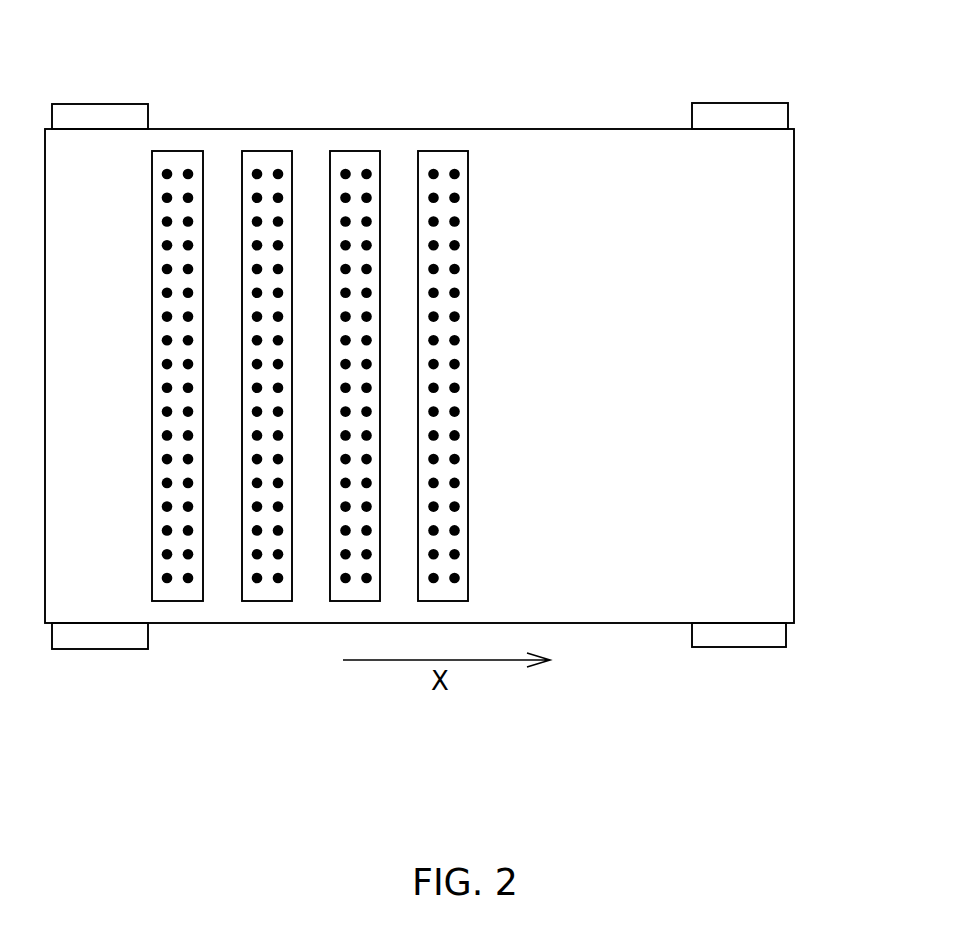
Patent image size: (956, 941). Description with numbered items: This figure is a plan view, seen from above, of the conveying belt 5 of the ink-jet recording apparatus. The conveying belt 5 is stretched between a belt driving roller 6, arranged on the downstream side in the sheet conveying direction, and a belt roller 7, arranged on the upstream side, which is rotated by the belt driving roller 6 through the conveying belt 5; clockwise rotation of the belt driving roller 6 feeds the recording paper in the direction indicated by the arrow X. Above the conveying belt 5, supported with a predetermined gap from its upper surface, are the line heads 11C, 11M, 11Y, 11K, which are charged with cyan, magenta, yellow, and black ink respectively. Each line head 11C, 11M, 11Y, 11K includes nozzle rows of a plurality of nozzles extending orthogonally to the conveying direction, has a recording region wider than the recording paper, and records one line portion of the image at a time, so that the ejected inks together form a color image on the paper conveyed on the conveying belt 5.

The conveying belt 5 is at (783, 557).
The belt driving roller 6 is at (739, 115).
The belt roller 7 is at (101, 117).
The line head 11C is at (183, 157).
The line head 11M is at (268, 157).
The line head 11Y is at (358, 157).
The line head 11K is at (447, 157).